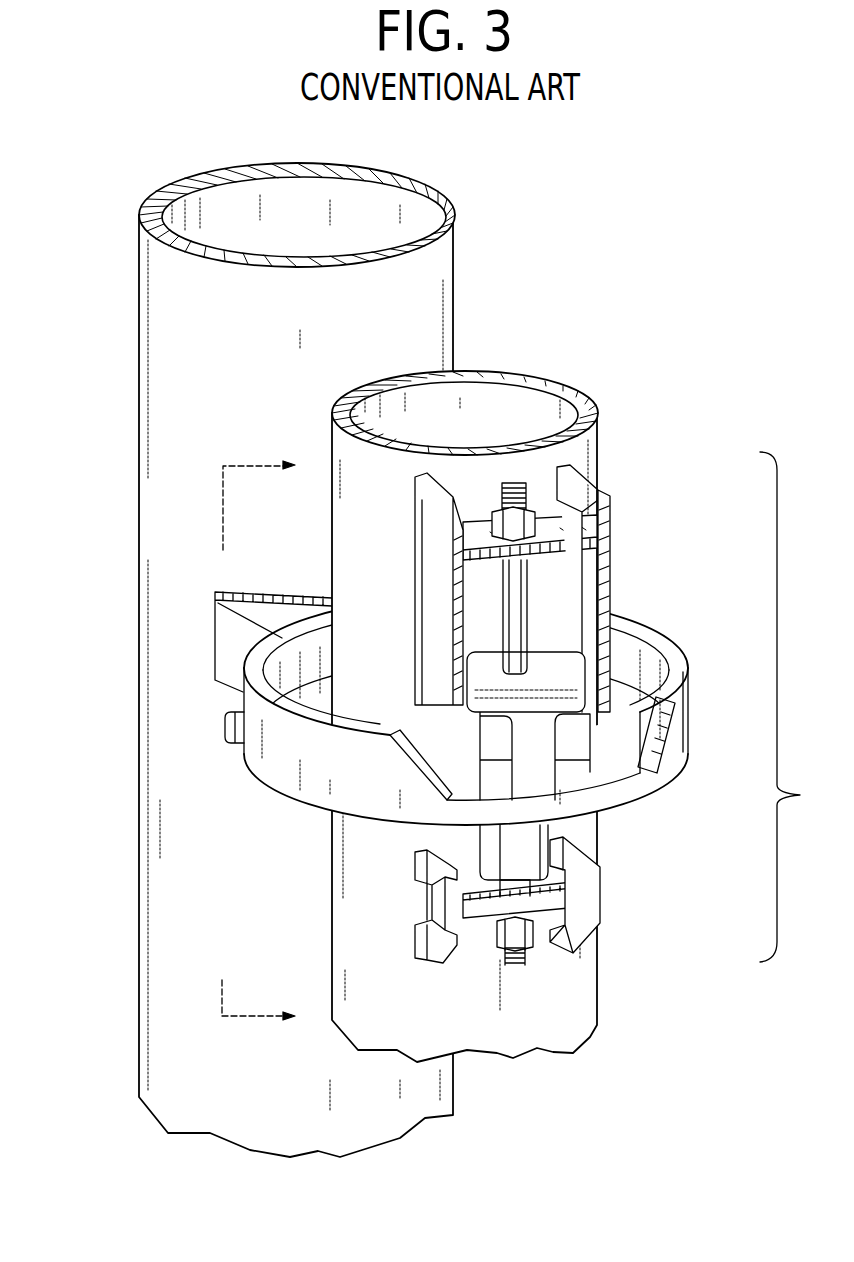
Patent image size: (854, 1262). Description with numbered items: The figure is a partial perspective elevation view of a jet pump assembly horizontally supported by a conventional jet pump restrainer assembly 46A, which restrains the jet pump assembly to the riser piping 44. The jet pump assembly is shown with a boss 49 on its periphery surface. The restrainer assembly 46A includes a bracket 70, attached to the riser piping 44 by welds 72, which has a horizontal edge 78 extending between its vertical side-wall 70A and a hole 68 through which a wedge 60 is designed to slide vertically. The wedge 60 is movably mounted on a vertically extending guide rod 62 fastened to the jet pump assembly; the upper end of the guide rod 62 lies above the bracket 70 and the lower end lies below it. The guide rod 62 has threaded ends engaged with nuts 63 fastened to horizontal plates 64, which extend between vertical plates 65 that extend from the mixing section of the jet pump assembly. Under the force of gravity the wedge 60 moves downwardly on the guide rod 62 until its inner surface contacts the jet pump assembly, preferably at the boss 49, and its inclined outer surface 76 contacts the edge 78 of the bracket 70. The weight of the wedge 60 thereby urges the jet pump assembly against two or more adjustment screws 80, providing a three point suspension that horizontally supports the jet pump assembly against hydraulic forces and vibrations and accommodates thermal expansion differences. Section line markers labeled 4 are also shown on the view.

The riser piping 44 is at (139, 402).
The boss 49 is at (362, 694).
The bracket 70 is at (277, 822).
The vertical side-wall 70A is at (682, 668).
The welds 72 is at (283, 597).
The adjustment screws 80 is at (228, 722).
The guide rod 62 is at (518, 583).
The vertical plates 65 is at (425, 504).
The horizontal plates 64 is at (596, 486).
The nuts 63 is at (500, 515).
The wedge 60 is at (490, 670).
The outer surface 76 is at (605, 788).
The edge 78 is at (470, 770).
The hole 68 is at (660, 733).
The jet pump restrainer assembly 46A is at (807, 707).
The section line 4 is at (258, 741).